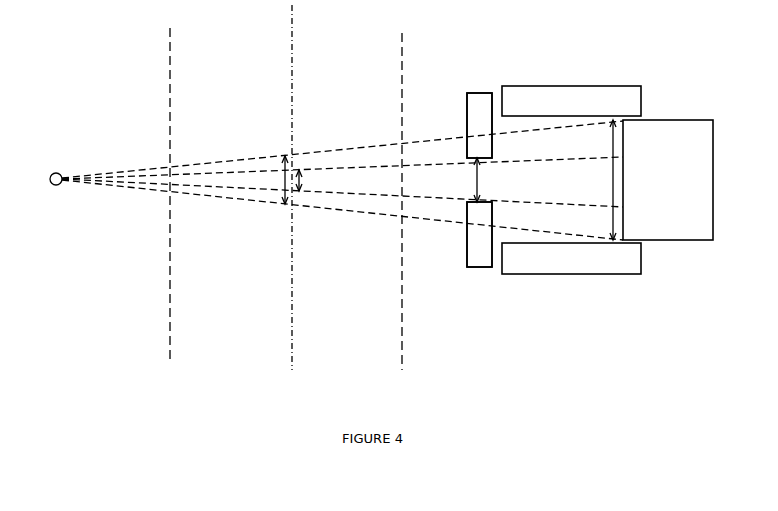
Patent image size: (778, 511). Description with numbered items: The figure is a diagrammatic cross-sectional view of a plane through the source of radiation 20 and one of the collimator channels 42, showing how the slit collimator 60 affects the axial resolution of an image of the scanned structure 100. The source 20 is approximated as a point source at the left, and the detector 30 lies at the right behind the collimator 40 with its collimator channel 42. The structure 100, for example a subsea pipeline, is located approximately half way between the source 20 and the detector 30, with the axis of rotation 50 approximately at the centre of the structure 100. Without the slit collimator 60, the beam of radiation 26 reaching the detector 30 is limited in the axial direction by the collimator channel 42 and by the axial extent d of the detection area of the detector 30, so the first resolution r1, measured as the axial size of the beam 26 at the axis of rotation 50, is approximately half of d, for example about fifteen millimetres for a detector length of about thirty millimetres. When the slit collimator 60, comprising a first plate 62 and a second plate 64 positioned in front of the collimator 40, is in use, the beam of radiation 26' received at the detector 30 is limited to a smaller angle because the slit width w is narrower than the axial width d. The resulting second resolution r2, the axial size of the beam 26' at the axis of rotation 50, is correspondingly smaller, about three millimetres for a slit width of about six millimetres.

The source of radiation 20 is at (55, 185).
The structure 100 is at (170, 280).
The axis of rotation 50 is at (291, 310).
The beam of radiation 26 is at (342, 121).
The beam of radiation 26' is at (342, 128).
The collimator channel 42 is at (508, 237).
The first resolution r1 is at (285, 183).
The second resolution r2 is at (300, 183).
The slit collimator 60 is at (477, 78).
The first plate 62 is at (477, 103).
The second plate 64 is at (482, 257).
The slit width w is at (488, 180).
The collimator 40 is at (543, 95).
The detector 30 is at (660, 143).
The axial extent of the detection area d is at (609, 180).